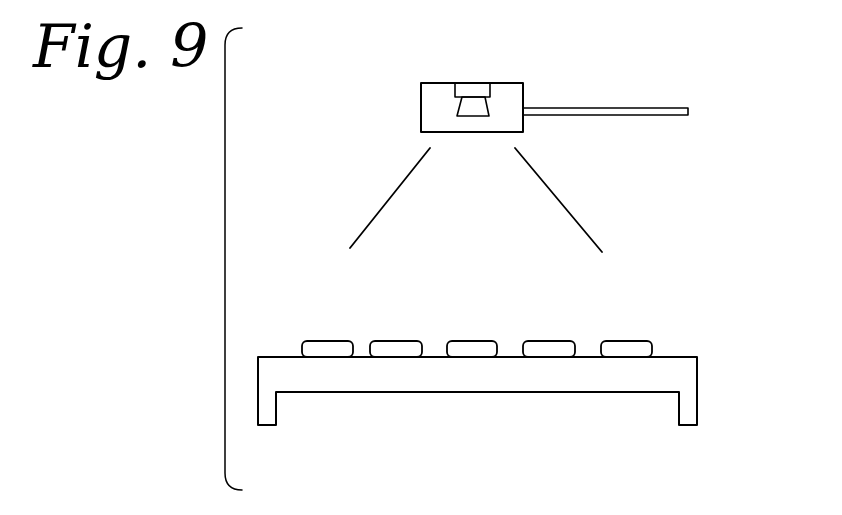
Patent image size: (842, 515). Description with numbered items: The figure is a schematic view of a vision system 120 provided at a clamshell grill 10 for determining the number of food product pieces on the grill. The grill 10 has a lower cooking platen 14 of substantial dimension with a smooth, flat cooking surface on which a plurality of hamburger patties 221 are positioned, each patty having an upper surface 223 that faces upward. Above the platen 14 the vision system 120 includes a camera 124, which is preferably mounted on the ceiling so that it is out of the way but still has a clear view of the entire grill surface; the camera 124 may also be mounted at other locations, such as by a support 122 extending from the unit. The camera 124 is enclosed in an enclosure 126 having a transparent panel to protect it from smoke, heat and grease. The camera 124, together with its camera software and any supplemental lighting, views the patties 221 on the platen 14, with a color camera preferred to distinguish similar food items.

The clamshell grill 10 is at (749, 238).
The lower cooking platen 14 is at (690, 357).
The vision system 120 is at (389, 131).
The support 122 is at (580, 105).
The camera 124 is at (421, 90).
The enclosure 126 is at (523, 120).
The hamburger patties 221 is at (314, 349).
The upper surface 223 is at (357, 325).